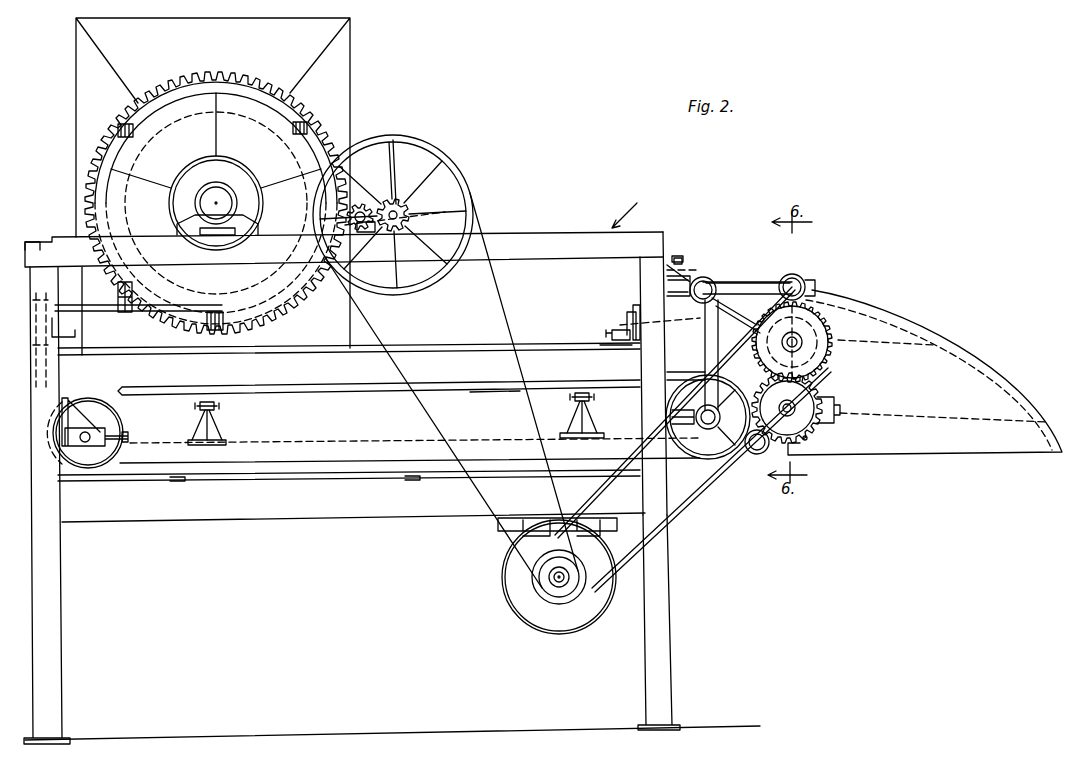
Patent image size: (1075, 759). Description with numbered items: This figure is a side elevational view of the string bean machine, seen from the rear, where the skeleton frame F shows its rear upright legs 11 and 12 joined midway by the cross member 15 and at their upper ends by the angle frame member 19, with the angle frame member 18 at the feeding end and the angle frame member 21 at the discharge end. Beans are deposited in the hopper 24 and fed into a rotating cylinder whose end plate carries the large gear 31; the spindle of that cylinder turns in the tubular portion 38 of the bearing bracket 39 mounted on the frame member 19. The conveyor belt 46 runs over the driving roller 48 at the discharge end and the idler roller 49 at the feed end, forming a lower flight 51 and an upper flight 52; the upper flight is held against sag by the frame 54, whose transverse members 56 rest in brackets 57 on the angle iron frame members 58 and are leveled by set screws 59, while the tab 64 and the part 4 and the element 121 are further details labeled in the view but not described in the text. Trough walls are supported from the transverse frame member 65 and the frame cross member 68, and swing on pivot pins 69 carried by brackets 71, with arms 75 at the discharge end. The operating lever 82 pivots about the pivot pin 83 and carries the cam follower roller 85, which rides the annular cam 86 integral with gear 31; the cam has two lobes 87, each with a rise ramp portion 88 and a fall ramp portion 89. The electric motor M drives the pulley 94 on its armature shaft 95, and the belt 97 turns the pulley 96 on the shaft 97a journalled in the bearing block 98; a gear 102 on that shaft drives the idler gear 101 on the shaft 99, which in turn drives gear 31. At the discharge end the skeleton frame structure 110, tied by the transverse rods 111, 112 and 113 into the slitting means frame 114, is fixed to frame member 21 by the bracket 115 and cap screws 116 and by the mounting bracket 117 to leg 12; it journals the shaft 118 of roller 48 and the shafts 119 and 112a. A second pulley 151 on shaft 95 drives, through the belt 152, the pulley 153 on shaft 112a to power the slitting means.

The shaft 4 is at (45, 281).
The upright leg 11 is at (58, 672).
The upright leg 12 is at (668, 668).
The cross member 15 is at (217, 513).
The angle frame member 18 is at (28, 240).
The angle frame member 19 is at (573, 233).
The angle frame member 21 is at (672, 255).
The hopper 24 is at (352, 22).
The gear 31 is at (216, 191).
The tubular portion 38 is at (222, 190).
The bearing bracket 39 is at (248, 222).
The conveyor belt 46 is at (108, 381).
The driving roller 48 is at (708, 441).
The idler roller 49 is at (67, 455).
The lower flight 51 is at (353, 481).
The upper flight 52 is at (122, 390).
The frame 54 is at (498, 393).
The transverse members 56 is at (197, 408).
The brackets 57 is at (220, 418).
The angle iron frame members 58 is at (340, 443).
The set screws 59 is at (208, 427).
The mounting tab 64 is at (412, 478).
The transverse frame member 65 is at (77, 336).
The frame cross member 68 is at (657, 318).
The pivot pins 69 is at (610, 332).
The brackets 71 is at (628, 308).
The arms 75 is at (615, 347).
The operating lever 82 is at (107, 311).
The pivot pin 83 is at (137, 283).
The cam follower roller 85 is at (213, 330).
The annular cam 86 is at (170, 88).
The cam lobes 87 is at (233, 95).
The rise ramp portion 88 is at (122, 126).
The fall ramp portion 89 is at (303, 126).
The pulley 94 is at (552, 585).
The armature shaft 95 is at (558, 582).
The pulley 96 is at (412, 204).
The belt 97 is at (502, 303).
The shaft 97a is at (410, 215).
The bearing block 98 is at (398, 206).
The shaft 99 is at (365, 233).
The idler gear 101 is at (362, 205).
The gear 102 is at (400, 207).
The skeleton frame structure 110 is at (710, 372).
The transverse rod 111 is at (806, 282).
The transverse rod 112 is at (710, 283).
The shaft 112a is at (828, 335).
The transverse rod 113 is at (757, 455).
The slitting means frame 114 is at (773, 281).
The bracket 115 is at (692, 287).
The cap screws 116 is at (678, 265).
The mounting bracket 117 is at (684, 371).
The shaft 118 is at (709, 430).
The shaft 119 is at (806, 402).
The gear 121 is at (803, 437).
The pulley 151 is at (577, 602).
The belt 152 is at (680, 507).
The pulley 153 is at (832, 357).
The electric motor M is at (542, 592).
The skeleton frame F is at (629, 207).